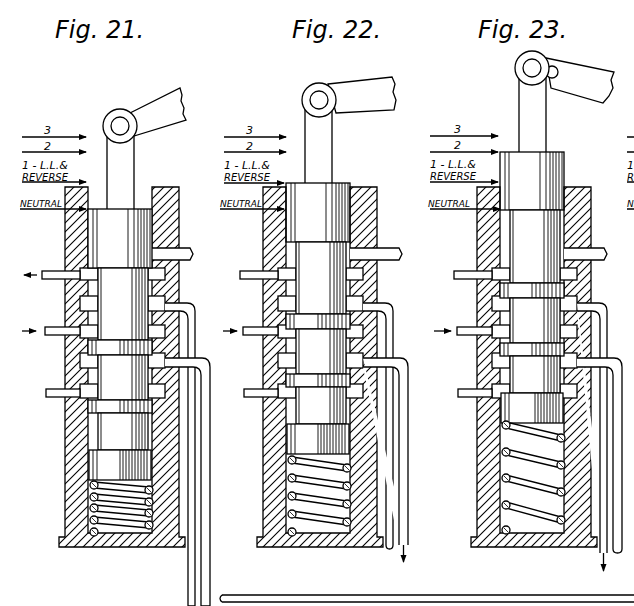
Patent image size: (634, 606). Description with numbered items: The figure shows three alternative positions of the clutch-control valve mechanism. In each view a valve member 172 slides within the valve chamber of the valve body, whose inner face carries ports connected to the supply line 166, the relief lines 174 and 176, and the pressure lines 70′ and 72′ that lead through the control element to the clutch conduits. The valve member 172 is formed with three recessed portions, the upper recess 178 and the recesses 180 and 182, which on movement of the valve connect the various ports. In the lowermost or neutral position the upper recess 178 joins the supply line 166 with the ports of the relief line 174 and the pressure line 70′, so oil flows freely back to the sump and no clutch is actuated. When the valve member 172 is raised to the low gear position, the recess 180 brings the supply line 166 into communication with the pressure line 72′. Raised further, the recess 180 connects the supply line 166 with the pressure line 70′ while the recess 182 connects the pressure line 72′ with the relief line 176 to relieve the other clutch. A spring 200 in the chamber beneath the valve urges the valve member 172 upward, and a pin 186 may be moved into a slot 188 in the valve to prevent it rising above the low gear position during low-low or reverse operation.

In FIG. 21, the relief line 174 is at (48, 270).
In FIG. 22, the relief line 174 is at (258, 284).
In FIG. 23, the relief line 174 is at (467, 286).
In FIG. 21, the upper recess 178 is at (80, 304).
In FIG. 22, the upper recess 178 is at (349, 287).
In FIG. 23, the upper recess 178 is at (558, 267).
In FIG. 21, the supply line 166 is at (52, 338).
In FIG. 22, the supply line 166 is at (250, 321).
In FIG. 23, the supply line 166 is at (463, 343).
In FIG. 21, the recess 180 is at (92, 378).
In FIG. 22, the recess 180 is at (299, 363).
In FIG. 23, the recess 180 is at (561, 315).
In FIG. 21, the relief line 176 is at (54, 400).
In FIG. 22, the relief line 176 is at (256, 405).
In FIG. 23, the relief line 176 is at (469, 405).
In FIG. 21, the recess 182 is at (95, 438).
In FIG. 22, the recess 182 is at (365, 434).
In FIG. 21, the pin 186 is at (195, 250).
In FIG. 22, the pin 186 is at (398, 253).
In FIG. 23, the pin 186 is at (599, 248).
In FIG. 21, the pressure line 70′ is at (190, 303).
In FIG. 22, the pressure line 70′ is at (391, 415).
In FIG. 23, the pressure line 70′ is at (605, 433).
In FIG. 21, the pressure line 72′ is at (211, 395).
In FIG. 22, the pressure line 72′ is at (392, 445).
In FIG. 23, the pressure line 72′ is at (599, 455).
In FIG. 21, the spring 200 is at (126, 522).
In FIG. 22, the spring 200 is at (319, 514).
In FIG. 23, the spring 200 is at (533, 495).
In FIG. 22, the slot 188 is at (331, 171).
In FIG. 23, the slot 188 is at (549, 139).
In FIG. 23, the valve member 172 is at (532, 408).